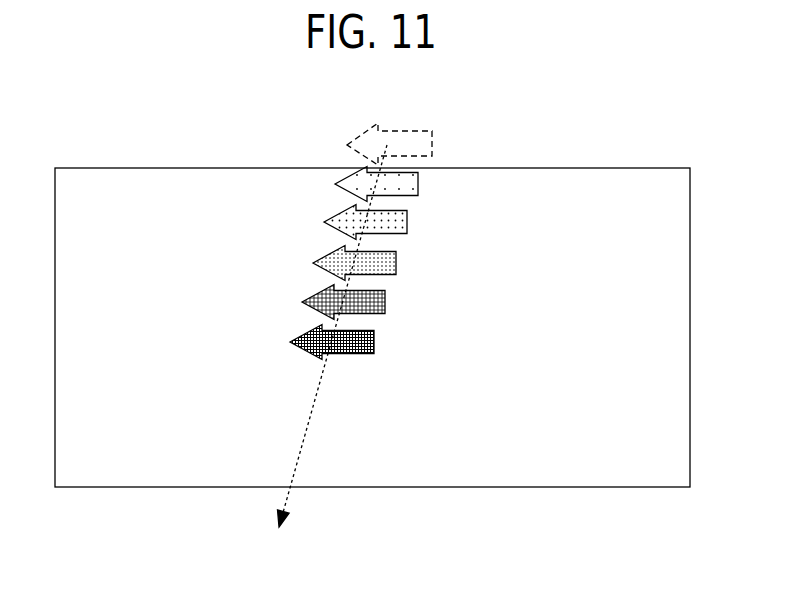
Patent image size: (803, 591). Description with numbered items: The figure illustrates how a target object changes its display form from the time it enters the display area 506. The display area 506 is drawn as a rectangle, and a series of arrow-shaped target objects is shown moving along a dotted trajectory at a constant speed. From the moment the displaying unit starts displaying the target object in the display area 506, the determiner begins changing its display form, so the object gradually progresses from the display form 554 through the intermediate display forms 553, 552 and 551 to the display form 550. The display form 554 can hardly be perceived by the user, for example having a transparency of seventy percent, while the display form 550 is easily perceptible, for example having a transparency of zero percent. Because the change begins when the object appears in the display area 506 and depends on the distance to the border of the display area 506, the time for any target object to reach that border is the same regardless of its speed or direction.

The display area 506 is at (532, 168).
The display form 550 is at (375, 342).
The display form 551 is at (386, 302).
The display form 552 is at (397, 263).
The display form 553 is at (408, 222).
The display form 554 is at (419, 184).